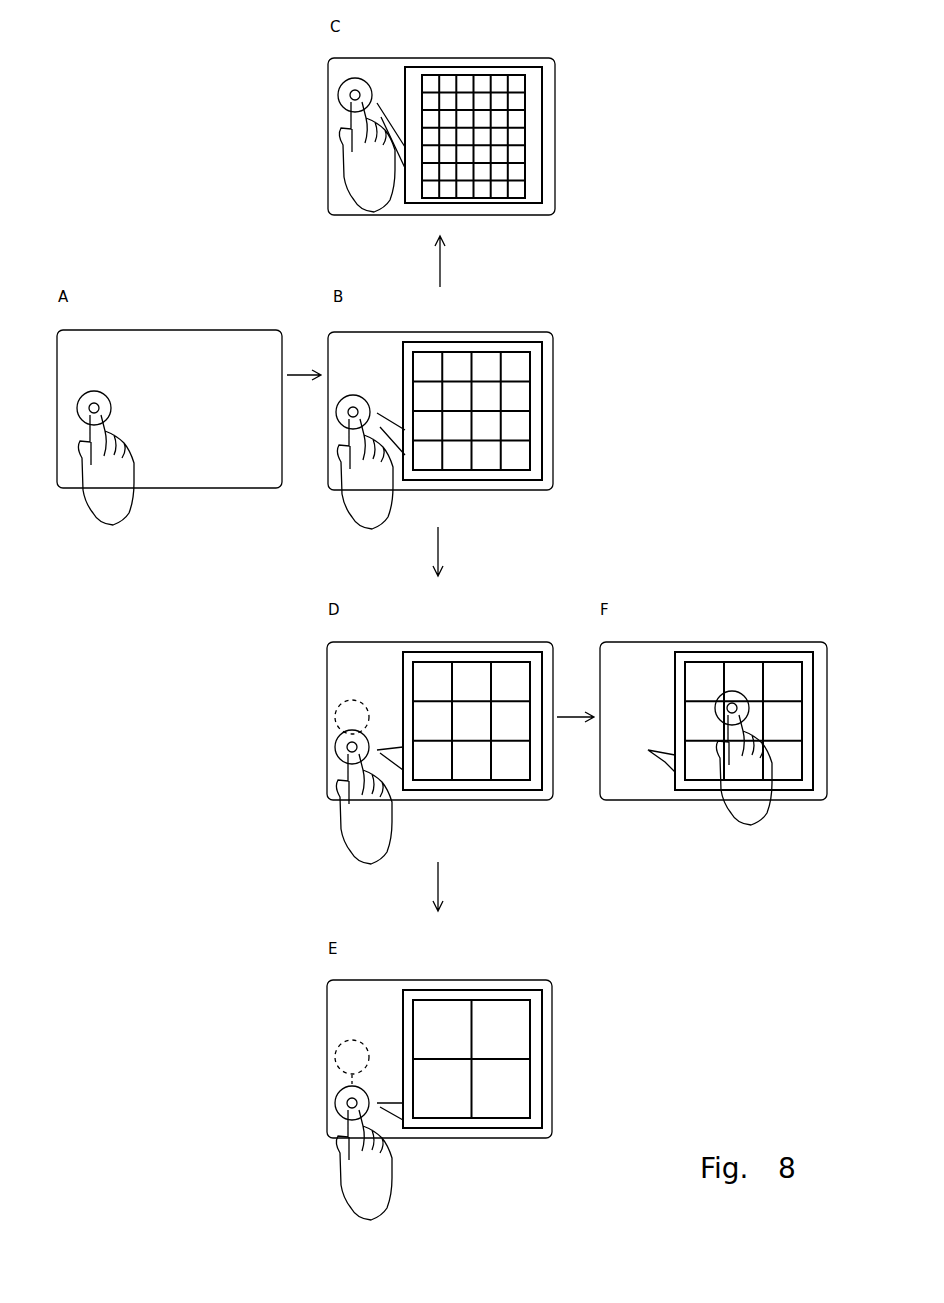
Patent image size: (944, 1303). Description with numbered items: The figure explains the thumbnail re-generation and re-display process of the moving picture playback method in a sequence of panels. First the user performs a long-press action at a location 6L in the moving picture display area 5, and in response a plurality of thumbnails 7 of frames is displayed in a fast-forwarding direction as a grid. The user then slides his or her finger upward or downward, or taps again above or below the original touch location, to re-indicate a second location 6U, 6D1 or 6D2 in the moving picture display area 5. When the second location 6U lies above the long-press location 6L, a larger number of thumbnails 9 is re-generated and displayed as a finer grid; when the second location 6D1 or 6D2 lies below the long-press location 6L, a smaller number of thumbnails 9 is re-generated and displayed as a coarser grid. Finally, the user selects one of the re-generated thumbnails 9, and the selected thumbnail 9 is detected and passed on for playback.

The moving picture display area 5 is at (442, 578).
The thumbnails 7 is at (518, 352).
The re-generated thumbnails 9 is at (607, 572).
The location 6L is at (77, 408).
The second location 6U is at (338, 95).
The second location 6D1 is at (335, 748).
The second location 6D2 is at (335, 1103).